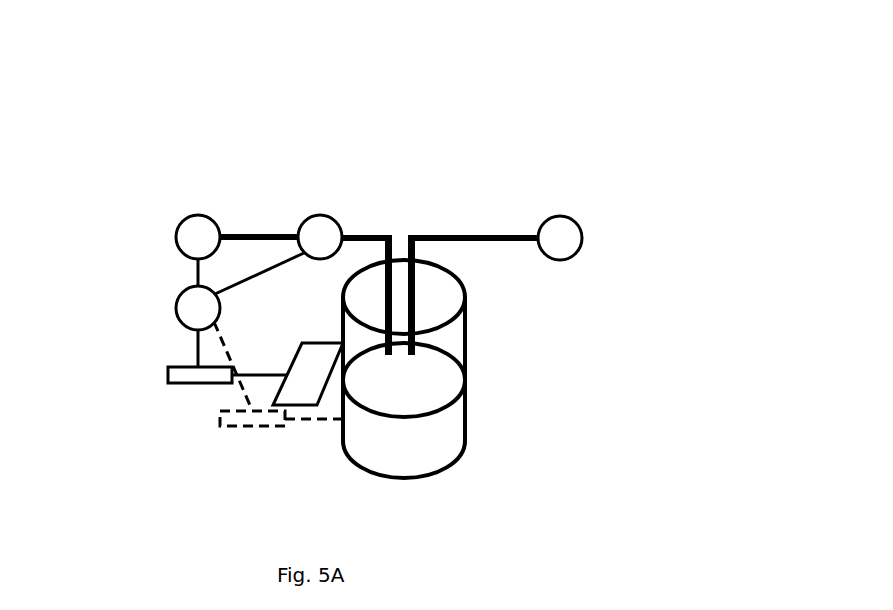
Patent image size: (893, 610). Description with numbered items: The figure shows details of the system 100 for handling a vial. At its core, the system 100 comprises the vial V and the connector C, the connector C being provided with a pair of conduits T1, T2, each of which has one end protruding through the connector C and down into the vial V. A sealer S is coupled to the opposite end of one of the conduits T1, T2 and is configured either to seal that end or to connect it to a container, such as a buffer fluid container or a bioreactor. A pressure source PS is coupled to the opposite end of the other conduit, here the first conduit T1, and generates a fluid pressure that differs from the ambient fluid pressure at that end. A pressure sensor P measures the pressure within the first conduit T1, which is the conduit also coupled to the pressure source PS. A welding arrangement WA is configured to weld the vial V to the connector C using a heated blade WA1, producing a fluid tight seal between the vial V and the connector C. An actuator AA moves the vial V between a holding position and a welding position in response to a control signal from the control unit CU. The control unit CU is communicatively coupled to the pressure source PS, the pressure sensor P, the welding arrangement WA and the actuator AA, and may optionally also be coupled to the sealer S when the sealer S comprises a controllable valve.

The system 100 is at (525, 120).
The first conduit T1 is at (376, 232).
The second conduit T2 is at (428, 232).
The pressure source PS is at (198, 237).
The pressure sensor P is at (320, 237).
The sealer S is at (560, 238).
The control unit CU is at (198, 308).
The heated blade WA1 is at (306, 340).
The welding arrangement WA is at (166, 375).
The actuator AA is at (218, 418).
The vial V is at (370, 427).
The connector C is at (452, 345).